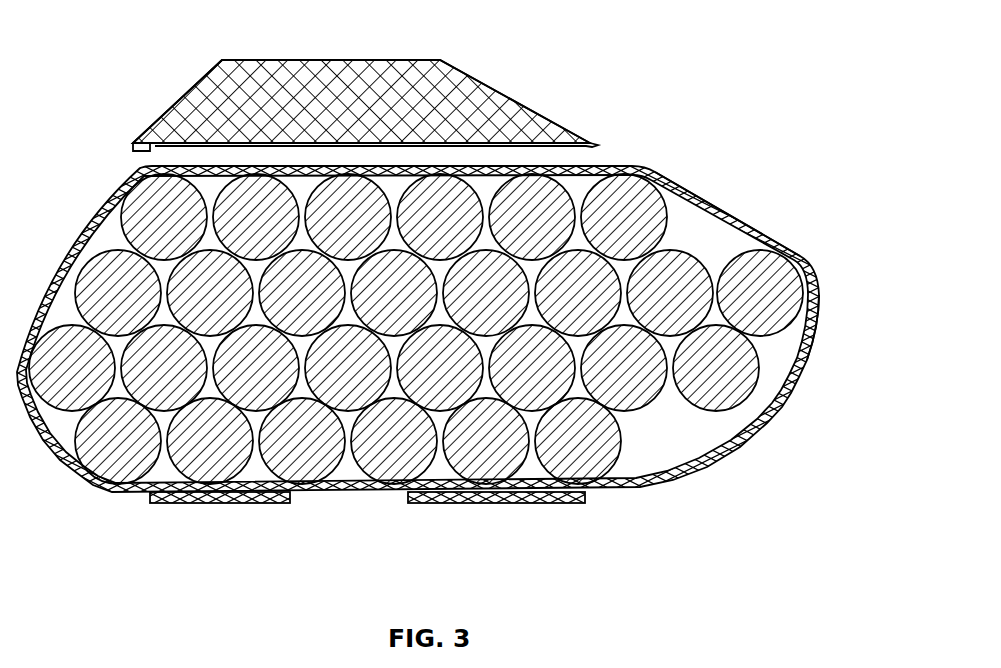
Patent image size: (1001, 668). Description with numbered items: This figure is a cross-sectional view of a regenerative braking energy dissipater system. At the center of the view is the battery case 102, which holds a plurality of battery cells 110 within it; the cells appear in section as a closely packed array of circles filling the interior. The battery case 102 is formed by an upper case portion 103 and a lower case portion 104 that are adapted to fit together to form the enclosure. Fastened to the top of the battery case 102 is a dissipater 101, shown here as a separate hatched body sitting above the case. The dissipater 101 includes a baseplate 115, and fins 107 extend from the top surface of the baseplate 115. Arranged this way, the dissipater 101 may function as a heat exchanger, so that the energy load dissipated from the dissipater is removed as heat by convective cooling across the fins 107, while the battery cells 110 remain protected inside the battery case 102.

The dissipater 101 is at (486, 82).
The fins 107 is at (394, 58).
The baseplate 115 is at (548, 146).
The battery case 102 is at (700, 202).
The upper case portion 103 is at (757, 235).
The lower case portion 104 is at (807, 349).
The battery cells 110 is at (644, 407).